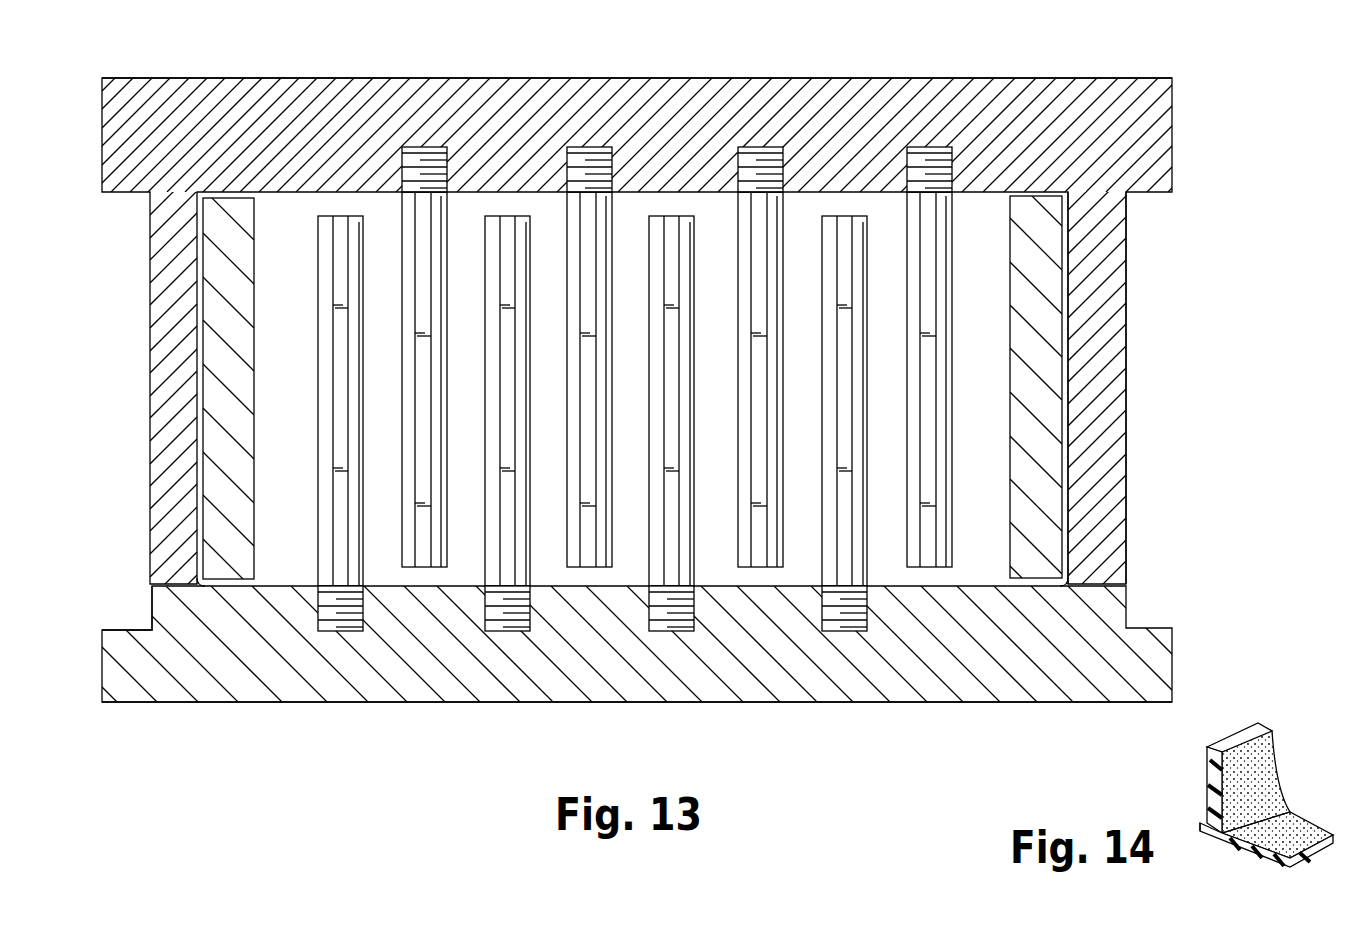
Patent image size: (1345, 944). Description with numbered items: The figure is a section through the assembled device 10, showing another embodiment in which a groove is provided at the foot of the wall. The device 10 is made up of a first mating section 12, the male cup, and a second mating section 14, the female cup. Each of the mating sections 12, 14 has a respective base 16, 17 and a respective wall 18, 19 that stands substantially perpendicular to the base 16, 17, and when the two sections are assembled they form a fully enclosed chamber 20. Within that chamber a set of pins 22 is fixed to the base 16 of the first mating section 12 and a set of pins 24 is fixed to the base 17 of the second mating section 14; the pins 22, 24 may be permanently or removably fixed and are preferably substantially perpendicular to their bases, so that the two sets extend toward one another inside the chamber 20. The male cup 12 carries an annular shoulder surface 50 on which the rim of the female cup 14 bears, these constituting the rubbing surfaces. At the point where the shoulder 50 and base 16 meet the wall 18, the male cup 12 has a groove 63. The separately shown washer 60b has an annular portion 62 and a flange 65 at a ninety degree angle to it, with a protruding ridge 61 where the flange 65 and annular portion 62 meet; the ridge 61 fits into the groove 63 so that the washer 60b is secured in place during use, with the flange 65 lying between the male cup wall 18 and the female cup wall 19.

In FIG. 13, the device 10 is at (1218, 126).
In FIG. 13, the first mating section 12 is at (1000, 668).
In FIG. 13, the second mating section 14 is at (990, 78).
In FIG. 13, the base 16 is at (771, 665).
In FIG. 13, the base 17 is at (561, 118).
In FIG. 13, the wall 18 is at (240, 343).
In FIG. 13, the wall 19 is at (1108, 331).
In FIG. 13, the chamber 20 is at (987, 357).
In FIG. 13, the pins 22 is at (318, 278).
In FIG. 13, the pins 24 is at (943, 243).
In FIG. 13, the annular shoulder surface 50 is at (170, 588).
In FIG. 13, the groove 63 is at (204, 582).
In FIG. 14, the washer 60b is at (1242, 763).
In FIG. 14, the ridge 61 is at (1198, 825).
In FIG. 14, the annular portion 62 is at (1300, 828).
In FIG. 14, the flange 65 is at (1270, 745).